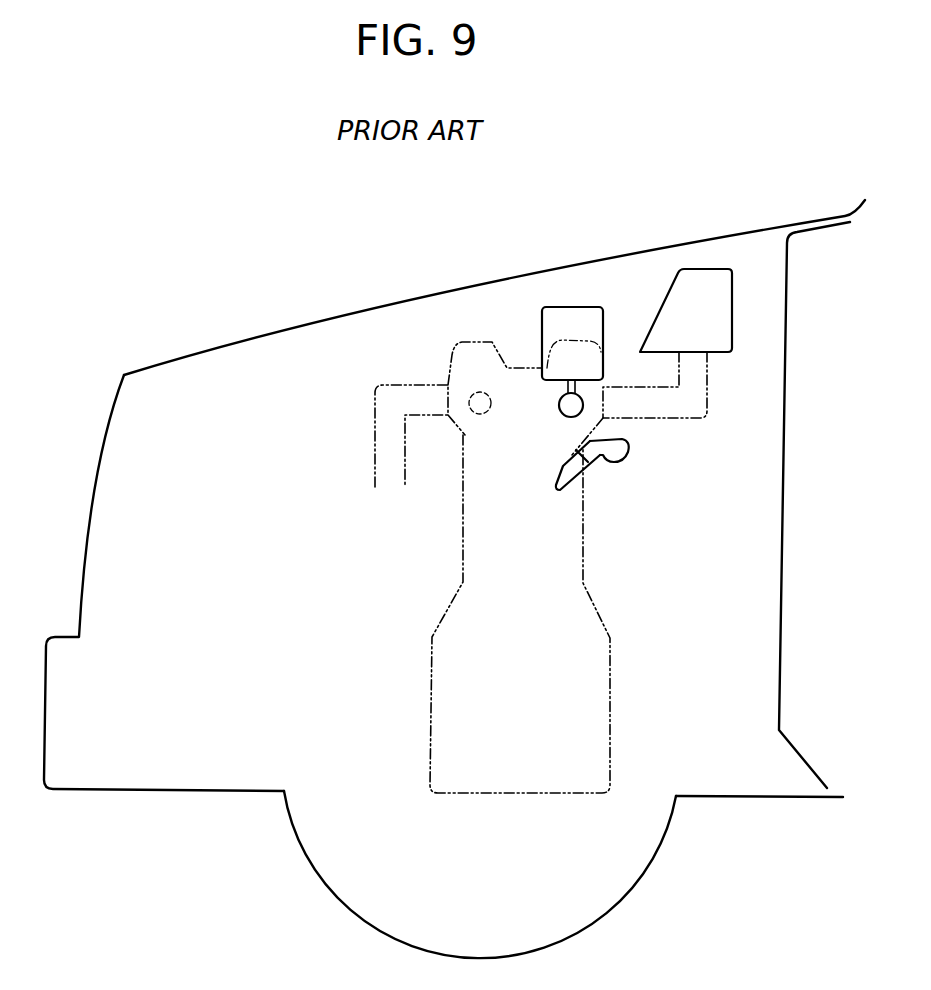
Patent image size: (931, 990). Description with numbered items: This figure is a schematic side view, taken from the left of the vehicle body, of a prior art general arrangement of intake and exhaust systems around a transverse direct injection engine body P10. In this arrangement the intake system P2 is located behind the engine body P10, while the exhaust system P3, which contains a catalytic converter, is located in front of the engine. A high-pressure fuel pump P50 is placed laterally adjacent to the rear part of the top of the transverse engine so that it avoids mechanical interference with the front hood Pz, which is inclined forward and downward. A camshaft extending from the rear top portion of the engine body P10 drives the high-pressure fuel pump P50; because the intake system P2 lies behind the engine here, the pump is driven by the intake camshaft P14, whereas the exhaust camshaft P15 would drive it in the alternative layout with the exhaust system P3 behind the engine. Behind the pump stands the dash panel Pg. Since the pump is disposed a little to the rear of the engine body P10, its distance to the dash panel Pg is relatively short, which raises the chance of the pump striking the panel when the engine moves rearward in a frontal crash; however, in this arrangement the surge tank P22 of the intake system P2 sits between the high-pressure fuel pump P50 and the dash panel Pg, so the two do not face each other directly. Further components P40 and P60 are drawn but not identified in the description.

The front hood Pz is at (388, 300).
The dash panel Pg is at (779, 562).
The engine body P10 is at (615, 677).
The exhaust system P3 is at (372, 455).
The exhaust camshaft P15 is at (469, 394).
The high-pressure fuel pump P50 is at (542, 323).
The intake camshaft P14 is at (583, 398).
The surge tank P22 is at (733, 337).
The intake system P2 is at (675, 425).
The cap P40 is at (618, 462).
The filler nozzle P60 is at (555, 487).